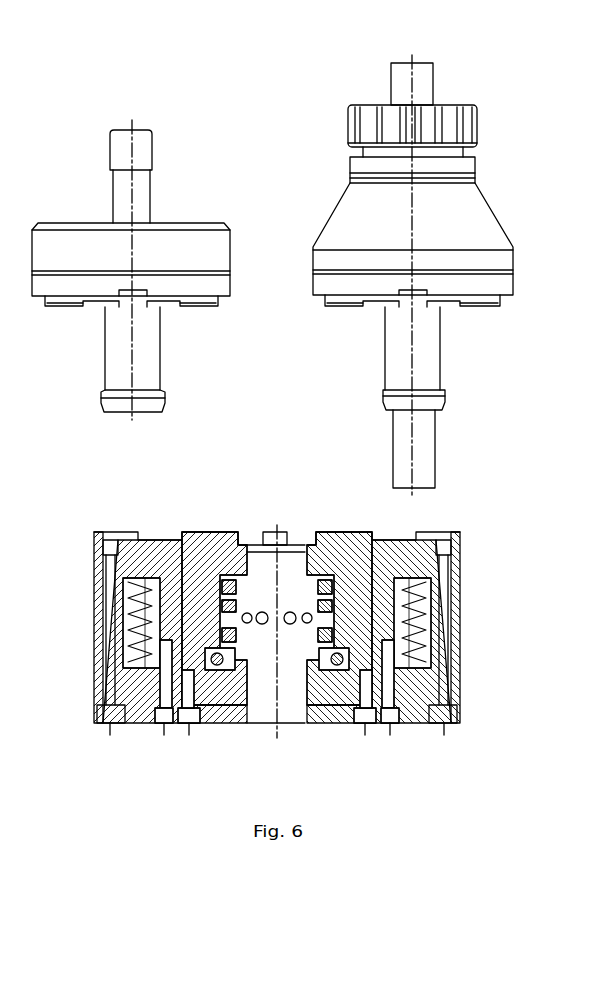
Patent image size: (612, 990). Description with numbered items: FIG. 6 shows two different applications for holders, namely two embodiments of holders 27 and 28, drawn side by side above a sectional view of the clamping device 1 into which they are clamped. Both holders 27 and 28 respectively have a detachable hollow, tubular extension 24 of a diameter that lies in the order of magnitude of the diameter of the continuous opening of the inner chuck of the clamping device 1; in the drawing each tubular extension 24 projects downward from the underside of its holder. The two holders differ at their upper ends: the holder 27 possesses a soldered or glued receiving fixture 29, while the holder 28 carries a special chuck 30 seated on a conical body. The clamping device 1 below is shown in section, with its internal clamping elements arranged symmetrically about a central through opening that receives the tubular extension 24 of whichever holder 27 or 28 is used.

The clamping device 1 is at (480, 608).
The detachable hollow tubular extension 24 is at (123, 350).
The holder 27 is at (118, 245).
The holder 28 is at (468, 226).
The receiving fixture 29 is at (123, 147).
The special chuck 30 is at (457, 127).